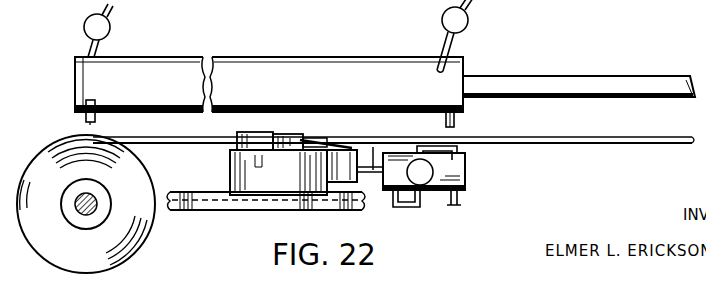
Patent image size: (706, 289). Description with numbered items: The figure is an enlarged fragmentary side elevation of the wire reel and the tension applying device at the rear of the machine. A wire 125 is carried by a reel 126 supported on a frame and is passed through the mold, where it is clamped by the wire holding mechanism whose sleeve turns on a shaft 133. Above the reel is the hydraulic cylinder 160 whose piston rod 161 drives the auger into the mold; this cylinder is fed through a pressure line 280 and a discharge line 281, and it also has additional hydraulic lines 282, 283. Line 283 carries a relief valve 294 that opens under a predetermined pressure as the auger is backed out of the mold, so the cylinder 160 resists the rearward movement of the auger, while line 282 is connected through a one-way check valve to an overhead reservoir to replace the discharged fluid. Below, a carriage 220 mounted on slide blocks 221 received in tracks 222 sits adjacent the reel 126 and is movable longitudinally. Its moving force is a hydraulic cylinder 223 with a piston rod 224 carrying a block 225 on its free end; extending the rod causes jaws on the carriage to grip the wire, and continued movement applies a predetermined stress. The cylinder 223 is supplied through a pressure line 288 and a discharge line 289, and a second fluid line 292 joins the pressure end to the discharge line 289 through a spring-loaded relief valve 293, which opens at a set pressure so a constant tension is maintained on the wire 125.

The wire 125 is at (600, 144).
The reel 126 is at (112, 246).
The shaft 133 is at (628, 2).
The hydraulic cylinder 160 is at (296, 33).
The piston rod 161 is at (604, 55).
The carriage 220 is at (243, 178).
The slide blocks 221 is at (253, 197).
The tracks 222 is at (348, 202).
The hydraulic cylinder 223 is at (460, 176).
The piston rod 224 is at (373, 150).
The block 225 is at (366, 128).
The pressure line 280 is at (86, 121).
The discharge line 281 is at (458, 122).
The hydraulic line 282 is at (460, 46).
The hydraulic line 283 is at (88, 48).
The pressure line 288 is at (462, 206).
The discharge line 289 is at (403, 212).
The fluid line 292 is at (463, 150).
The relief valve 293 is at (433, 188).
The relief valve 294 is at (110, 28).